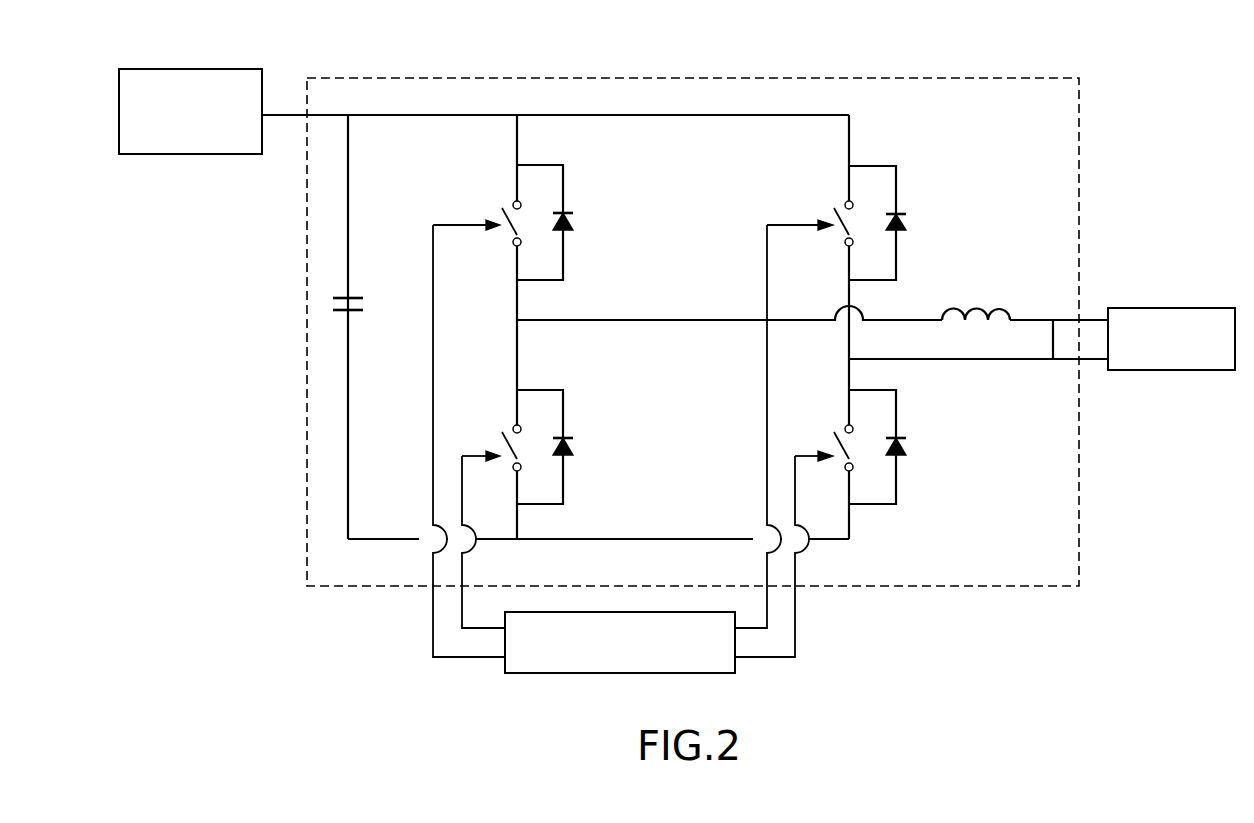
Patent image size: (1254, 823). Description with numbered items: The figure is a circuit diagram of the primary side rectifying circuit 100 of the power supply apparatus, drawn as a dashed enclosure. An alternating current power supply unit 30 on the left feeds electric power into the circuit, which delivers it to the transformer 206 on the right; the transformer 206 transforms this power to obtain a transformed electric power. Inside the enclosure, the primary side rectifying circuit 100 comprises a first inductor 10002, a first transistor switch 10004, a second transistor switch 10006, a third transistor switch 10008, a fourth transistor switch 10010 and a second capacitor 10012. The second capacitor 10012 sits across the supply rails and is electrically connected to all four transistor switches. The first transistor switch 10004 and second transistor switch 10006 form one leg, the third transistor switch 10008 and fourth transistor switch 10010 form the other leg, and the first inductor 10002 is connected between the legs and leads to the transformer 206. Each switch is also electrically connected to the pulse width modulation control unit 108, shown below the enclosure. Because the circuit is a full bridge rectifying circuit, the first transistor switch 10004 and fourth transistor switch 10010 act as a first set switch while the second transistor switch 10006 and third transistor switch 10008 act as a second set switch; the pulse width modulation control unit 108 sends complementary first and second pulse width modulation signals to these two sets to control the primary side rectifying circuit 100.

The alternating current power supply unit 30 is at (188, 69).
The primary side rectifying circuit 100 is at (1055, 130).
The first inductor 10002 is at (968, 302).
The first transistor switch 10004 is at (572, 202).
The second transistor switch 10006 is at (577, 422).
The third transistor switch 10008 is at (903, 203).
The fourth transistor switch 10010 is at (908, 423).
The second capacitor 10012 is at (333, 283).
The pulse width modulation control unit 108 is at (530, 668).
The transformer 206 is at (1178, 313).